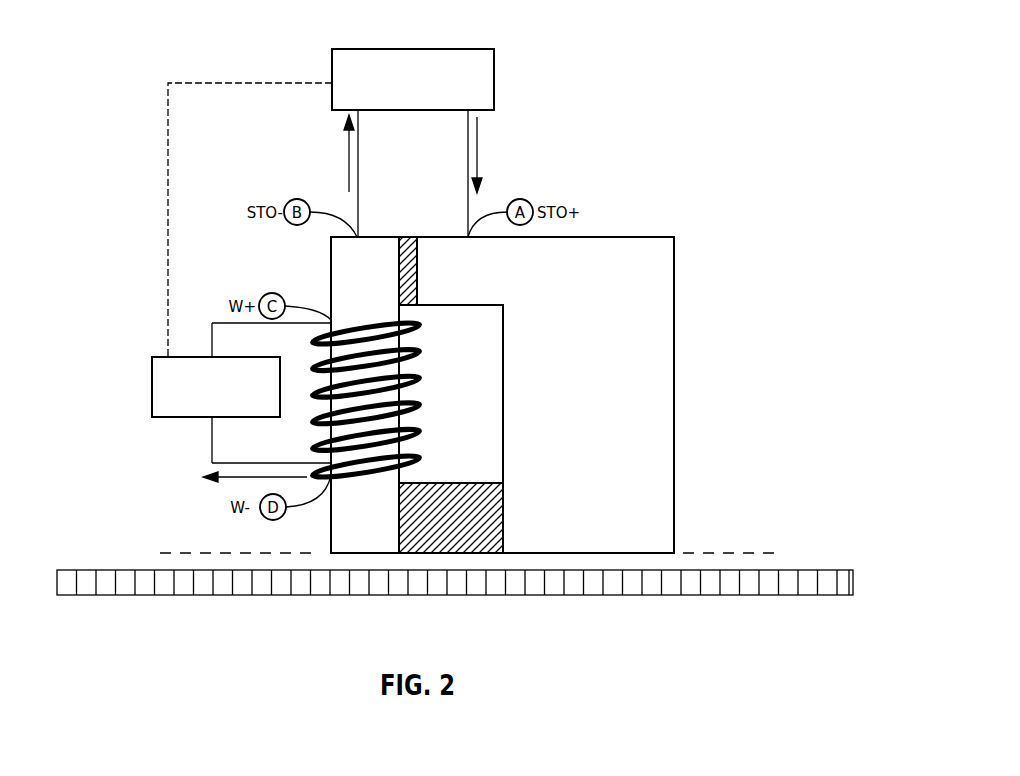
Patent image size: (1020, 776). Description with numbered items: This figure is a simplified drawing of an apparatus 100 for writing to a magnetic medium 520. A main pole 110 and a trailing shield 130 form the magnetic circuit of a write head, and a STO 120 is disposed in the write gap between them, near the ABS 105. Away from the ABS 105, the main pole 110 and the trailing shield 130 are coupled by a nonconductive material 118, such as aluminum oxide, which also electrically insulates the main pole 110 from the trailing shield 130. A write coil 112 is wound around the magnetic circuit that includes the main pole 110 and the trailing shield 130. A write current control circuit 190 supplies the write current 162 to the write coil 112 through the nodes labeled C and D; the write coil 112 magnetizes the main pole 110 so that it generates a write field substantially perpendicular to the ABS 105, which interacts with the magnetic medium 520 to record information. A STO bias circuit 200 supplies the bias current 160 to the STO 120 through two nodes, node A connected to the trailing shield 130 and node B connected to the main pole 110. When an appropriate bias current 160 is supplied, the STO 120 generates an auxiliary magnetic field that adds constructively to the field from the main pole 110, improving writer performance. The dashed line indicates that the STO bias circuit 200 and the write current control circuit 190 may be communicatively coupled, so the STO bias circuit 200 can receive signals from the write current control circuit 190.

The apparatus 100 is at (75, 292).
The ABS 105 is at (715, 553).
The main pole 110 is at (331, 302).
The write coil 112 is at (418, 380).
The nonconductive material 118 is at (405, 237).
The STO 120 is at (442, 483).
The trailing shield 130 is at (674, 348).
The bias current 160 is at (528, 155).
The write current 162 is at (230, 480).
The write current control circuit 190 is at (152, 393).
The STO bias circuit 200 is at (332, 70).
The magnetic medium 520 is at (725, 595).